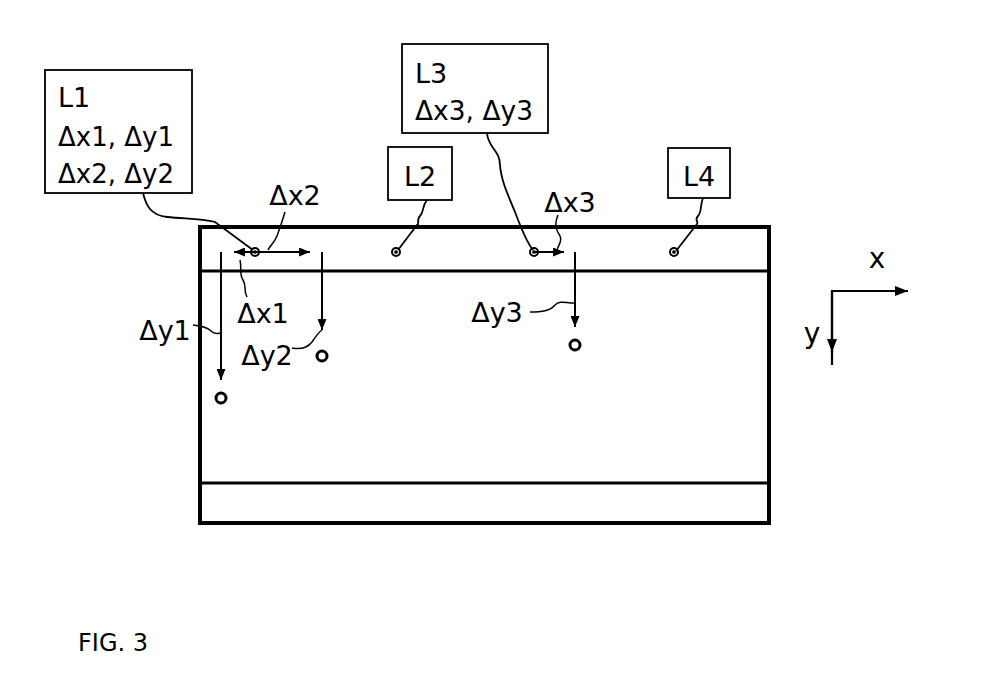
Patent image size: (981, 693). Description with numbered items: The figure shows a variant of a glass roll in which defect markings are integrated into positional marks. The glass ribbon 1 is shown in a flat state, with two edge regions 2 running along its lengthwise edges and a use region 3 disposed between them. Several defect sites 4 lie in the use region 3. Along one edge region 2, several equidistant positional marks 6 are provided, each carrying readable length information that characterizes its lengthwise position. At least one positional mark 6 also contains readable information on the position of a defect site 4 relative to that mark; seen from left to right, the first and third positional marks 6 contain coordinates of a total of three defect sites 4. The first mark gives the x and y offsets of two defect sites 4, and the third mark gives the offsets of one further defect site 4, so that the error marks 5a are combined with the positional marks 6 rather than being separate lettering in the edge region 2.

The glass ribbon 1 is at (759, 188).
The edge region 2 is at (748, 249).
The use region 3 is at (707, 387).
The defect site 4 is at (322, 380).
The error mark 5a is at (255, 238).
The positional mark 6 is at (383, 214).